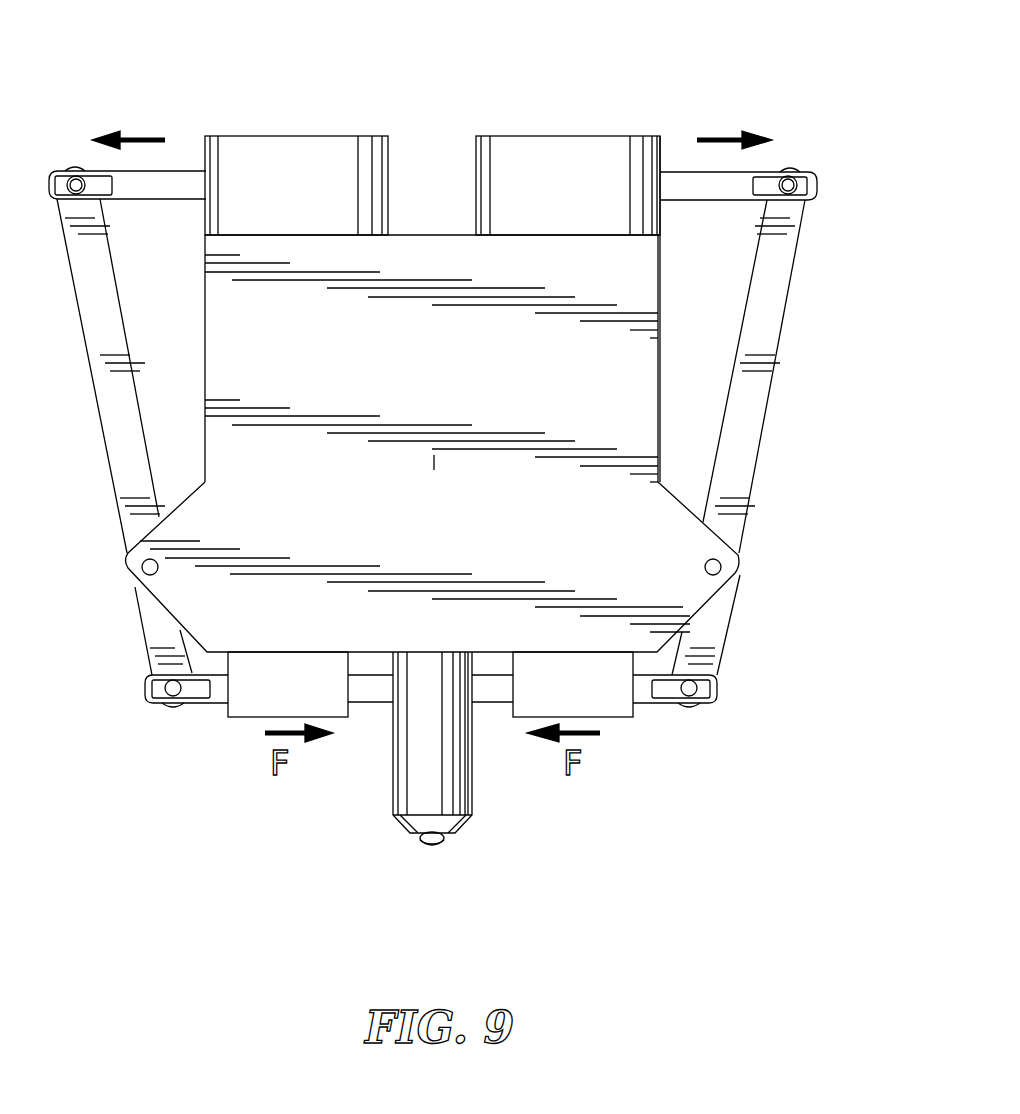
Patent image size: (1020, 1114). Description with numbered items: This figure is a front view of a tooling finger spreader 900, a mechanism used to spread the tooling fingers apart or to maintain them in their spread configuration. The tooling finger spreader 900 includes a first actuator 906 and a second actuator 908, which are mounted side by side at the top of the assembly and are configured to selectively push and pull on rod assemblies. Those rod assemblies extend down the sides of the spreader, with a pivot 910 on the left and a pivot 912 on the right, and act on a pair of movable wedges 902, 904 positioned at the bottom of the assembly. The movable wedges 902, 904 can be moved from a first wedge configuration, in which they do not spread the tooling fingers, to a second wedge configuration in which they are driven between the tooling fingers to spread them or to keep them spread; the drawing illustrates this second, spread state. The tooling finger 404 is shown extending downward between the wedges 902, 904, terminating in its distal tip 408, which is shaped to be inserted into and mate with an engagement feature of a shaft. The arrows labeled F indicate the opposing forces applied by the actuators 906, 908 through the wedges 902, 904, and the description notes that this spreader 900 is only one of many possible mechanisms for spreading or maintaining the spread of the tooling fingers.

The tooling finger spreader 900 is at (433, 453).
The first actuator 906 is at (273, 136).
The second actuator 908 is at (557, 136).
The left pivot 910 is at (142, 566).
The right pivot 912 is at (722, 566).
The movable wedge 902 is at (387, 678).
The movable wedge 904 is at (477, 678).
The tooling finger 404 is at (472, 760).
The distal tip 408 is at (442, 843).